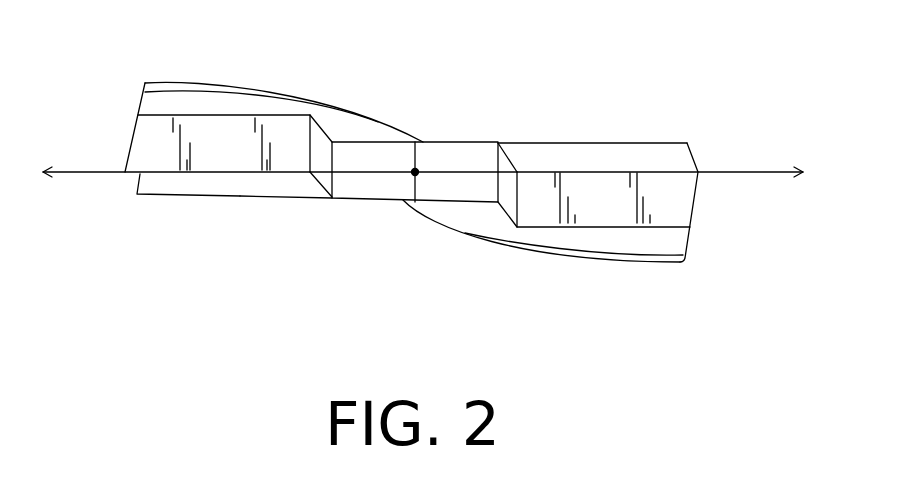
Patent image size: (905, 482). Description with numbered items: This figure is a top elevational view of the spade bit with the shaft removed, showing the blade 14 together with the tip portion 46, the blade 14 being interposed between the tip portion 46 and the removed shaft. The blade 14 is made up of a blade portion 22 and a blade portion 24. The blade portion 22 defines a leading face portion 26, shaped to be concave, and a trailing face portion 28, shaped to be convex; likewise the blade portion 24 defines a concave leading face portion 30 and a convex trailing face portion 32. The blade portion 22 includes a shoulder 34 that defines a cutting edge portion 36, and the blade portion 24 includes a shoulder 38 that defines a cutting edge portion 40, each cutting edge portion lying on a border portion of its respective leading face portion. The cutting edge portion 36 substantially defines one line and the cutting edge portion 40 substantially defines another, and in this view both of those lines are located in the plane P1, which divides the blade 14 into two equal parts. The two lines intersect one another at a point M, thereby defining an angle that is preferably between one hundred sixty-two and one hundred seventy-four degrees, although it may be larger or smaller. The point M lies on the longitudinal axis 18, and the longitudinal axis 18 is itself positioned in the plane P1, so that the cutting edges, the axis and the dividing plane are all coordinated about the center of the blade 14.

The blade 14 is at (438, 190).
The longitudinal axis 18 is at (414, 172).
The blade portion 22 is at (316, 84).
The blade portion 24 is at (527, 273).
The leading face portion 26 is at (163, 185).
The trailing face portion 28 is at (177, 102).
The leading face portion 30 is at (667, 158).
The trailing face portion 32 is at (637, 240).
The shoulder 34 is at (152, 147).
The cutting edge portion 36 is at (242, 175).
The shoulder 38 is at (680, 197).
The cutting edge portion 40 is at (585, 170).
The tip portion 46 is at (385, 185).
The point M is at (416, 172).
The plane P1 is at (752, 170).